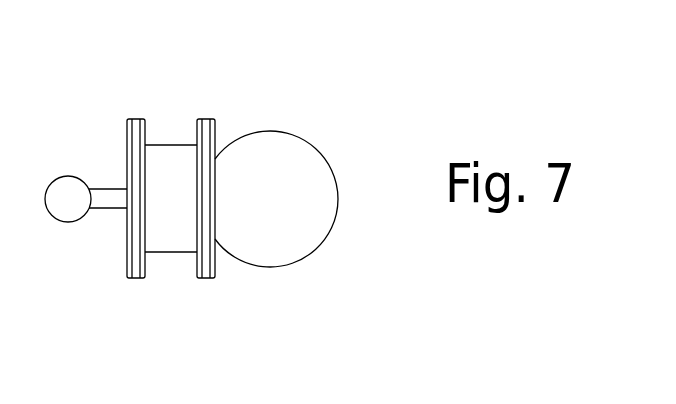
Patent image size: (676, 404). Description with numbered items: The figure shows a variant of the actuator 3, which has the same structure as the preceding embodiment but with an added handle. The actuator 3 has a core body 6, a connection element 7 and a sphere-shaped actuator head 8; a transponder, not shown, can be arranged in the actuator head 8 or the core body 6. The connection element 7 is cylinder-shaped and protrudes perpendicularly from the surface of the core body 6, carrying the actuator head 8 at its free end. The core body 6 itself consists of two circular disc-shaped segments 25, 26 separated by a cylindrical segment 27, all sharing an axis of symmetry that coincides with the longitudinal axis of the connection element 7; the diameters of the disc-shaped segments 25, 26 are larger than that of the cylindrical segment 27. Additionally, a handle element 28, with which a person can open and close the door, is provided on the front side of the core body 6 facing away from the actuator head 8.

The actuator 3 is at (345, 300).
The core body 6 is at (189, 103).
The connection element 7 is at (102, 187).
The actuator head 8 is at (63, 192).
The circular disc-shaped segment 25 is at (206, 279).
The circular disc-shaped segment 26 is at (143, 279).
The cylindrical segment 27 is at (172, 253).
The handle element 28 is at (277, 140).